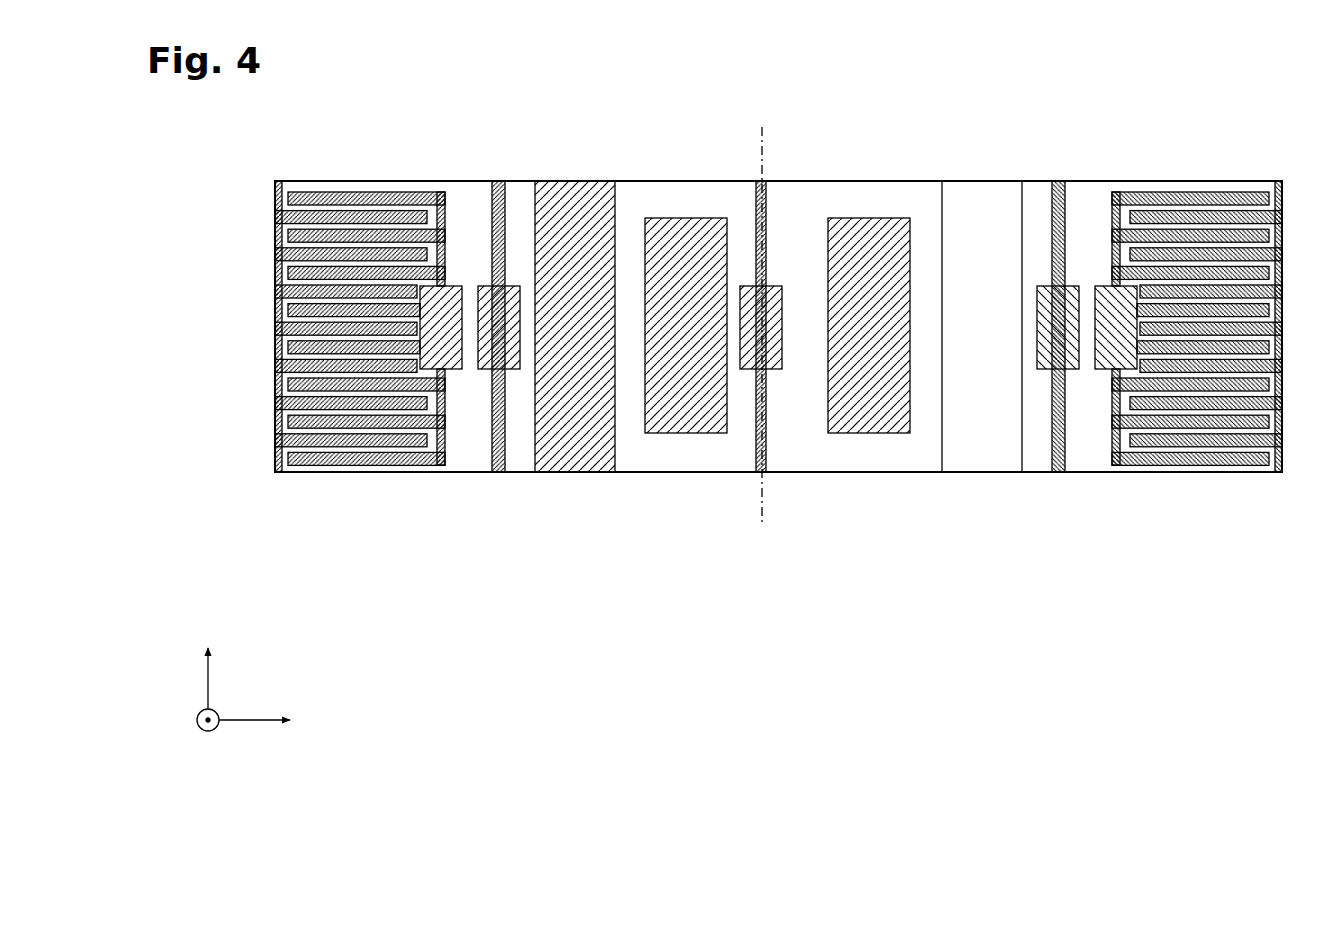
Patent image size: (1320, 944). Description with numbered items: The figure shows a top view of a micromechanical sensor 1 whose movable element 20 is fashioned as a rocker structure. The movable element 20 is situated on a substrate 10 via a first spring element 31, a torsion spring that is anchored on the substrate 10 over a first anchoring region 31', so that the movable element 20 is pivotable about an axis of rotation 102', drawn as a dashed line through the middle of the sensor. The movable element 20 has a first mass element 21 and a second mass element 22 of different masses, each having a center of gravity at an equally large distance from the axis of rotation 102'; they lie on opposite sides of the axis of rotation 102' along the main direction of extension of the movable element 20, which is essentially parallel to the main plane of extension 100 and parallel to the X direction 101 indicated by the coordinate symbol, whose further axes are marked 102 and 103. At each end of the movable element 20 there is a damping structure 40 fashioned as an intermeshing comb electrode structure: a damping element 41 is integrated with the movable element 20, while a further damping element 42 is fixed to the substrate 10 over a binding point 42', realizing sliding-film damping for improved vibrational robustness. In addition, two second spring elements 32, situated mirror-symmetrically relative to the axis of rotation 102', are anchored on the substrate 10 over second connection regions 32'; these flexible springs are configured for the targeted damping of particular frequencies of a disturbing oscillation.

The micromechanical sensor 1 is at (222, 173).
The substrate 10 is at (246, 332).
The movable element 20 is at (659, 176).
The first mass element 21 is at (577, 188).
The second mass element 22 is at (978, 180).
The first spring element 31 is at (786, 326).
The first anchoring region 31' is at (781, 305).
The second spring element 32 is at (777, 329).
The second connection region 32' is at (780, 358).
The damping structure 40 is at (321, 165).
The damping element 41 is at (283, 475).
The further damping element 42 is at (778, 387).
The binding point 42' is at (778, 295).
The main plane of extension 100 is at (281, 688).
The X direction 101 is at (257, 740).
The second direction axis 102 is at (184, 671).
The axis of rotation 102' is at (801, 299).
The third direction axis 103 is at (197, 722).